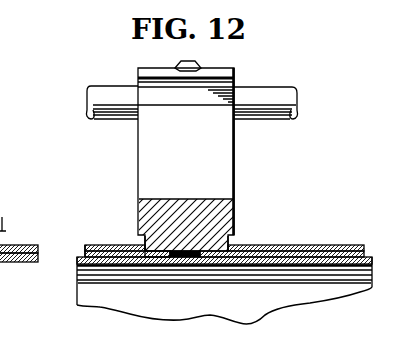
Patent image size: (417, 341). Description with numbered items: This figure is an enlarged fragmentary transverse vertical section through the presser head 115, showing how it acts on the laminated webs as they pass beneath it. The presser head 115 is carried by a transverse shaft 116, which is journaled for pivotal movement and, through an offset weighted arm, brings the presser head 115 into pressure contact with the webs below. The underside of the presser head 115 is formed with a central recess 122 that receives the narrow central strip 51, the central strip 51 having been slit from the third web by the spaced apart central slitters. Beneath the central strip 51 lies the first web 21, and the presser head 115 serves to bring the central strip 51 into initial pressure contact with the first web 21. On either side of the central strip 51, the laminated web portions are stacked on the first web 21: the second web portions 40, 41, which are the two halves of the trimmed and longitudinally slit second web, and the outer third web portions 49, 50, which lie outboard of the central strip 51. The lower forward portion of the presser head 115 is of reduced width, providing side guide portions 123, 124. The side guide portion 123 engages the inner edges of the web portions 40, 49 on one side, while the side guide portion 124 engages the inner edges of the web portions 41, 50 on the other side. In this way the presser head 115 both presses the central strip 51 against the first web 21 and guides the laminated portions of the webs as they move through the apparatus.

The first web 21 is at (138, 265).
The second web portion 40 is at (84, 252).
The second web portion 41 is at (323, 254).
The outer third web portion 49 is at (85, 246).
The outer third web portion 50 is at (292, 246).
The central strip 51 is at (175, 252).
The presser head 115 is at (236, 176).
The transverse shaft 116 is at (268, 118).
The central recess 122 is at (191, 251).
The side guide portion 123 is at (145, 239).
The side guide portion 124 is at (230, 240).